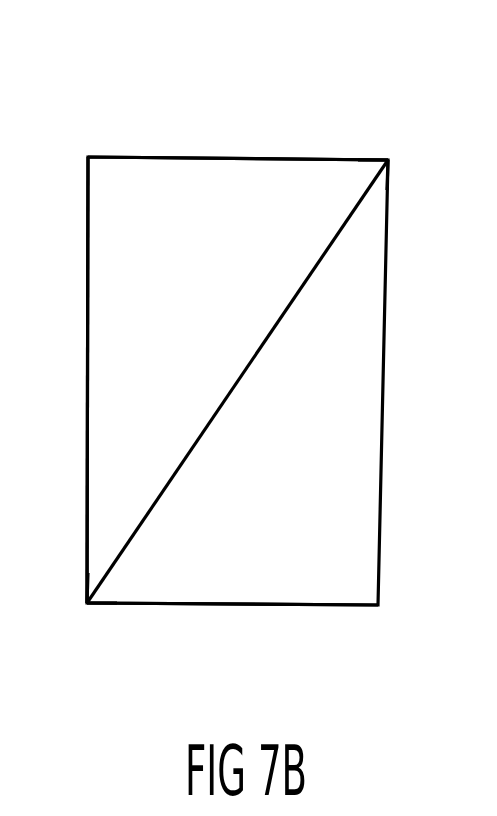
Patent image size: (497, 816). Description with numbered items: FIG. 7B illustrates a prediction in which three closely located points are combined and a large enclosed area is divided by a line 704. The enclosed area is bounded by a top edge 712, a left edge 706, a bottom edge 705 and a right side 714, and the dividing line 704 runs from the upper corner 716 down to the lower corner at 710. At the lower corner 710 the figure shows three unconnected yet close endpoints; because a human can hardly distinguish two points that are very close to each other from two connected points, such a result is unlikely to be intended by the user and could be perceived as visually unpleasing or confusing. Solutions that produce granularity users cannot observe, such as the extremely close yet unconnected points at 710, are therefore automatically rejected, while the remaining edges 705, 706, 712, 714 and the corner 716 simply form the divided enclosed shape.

The diagonal fold line 704 is at (245, 348).
The bottom edge 705 is at (256, 620).
The left edge 706 is at (75, 319).
The unconnected yet close endpoints 710 is at (80, 646).
The top edge 712 is at (275, 140).
The rectangular sheet / panel 714 is at (268, 381).
The top-right corner 716 is at (399, 151).